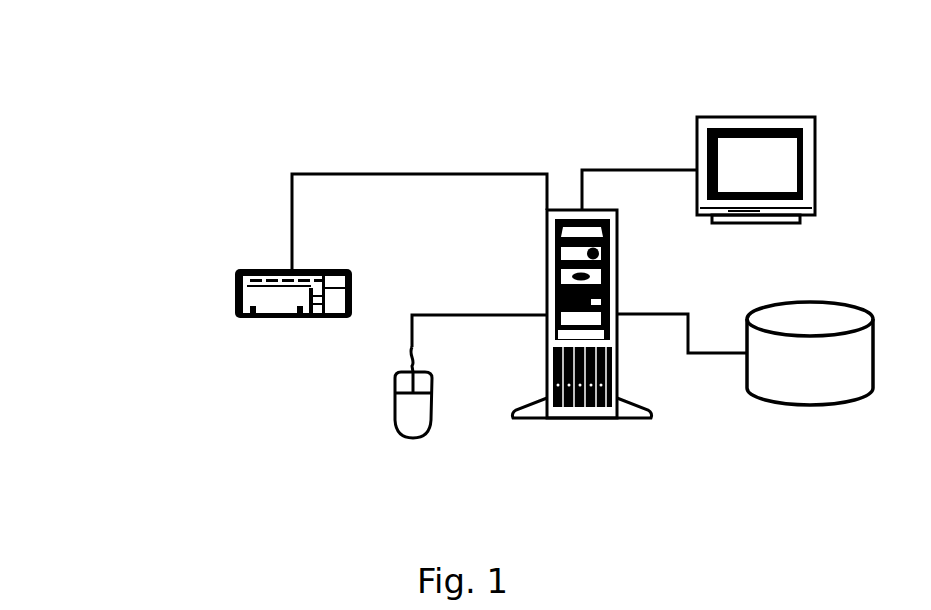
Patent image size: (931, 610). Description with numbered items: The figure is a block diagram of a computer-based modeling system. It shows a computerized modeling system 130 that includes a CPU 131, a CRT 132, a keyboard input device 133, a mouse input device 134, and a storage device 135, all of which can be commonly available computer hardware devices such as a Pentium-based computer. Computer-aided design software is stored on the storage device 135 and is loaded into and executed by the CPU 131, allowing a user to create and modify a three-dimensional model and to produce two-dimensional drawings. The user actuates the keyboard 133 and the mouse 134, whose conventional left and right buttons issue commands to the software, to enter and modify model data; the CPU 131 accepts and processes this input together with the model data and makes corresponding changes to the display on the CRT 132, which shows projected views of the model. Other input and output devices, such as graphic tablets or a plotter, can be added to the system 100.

The system 100 is at (578, 48).
The computerized modeling system 130 is at (178, 132).
The CPU 131 is at (581, 337).
The CRT 132 is at (756, 193).
The keyboard input device 133 is at (293, 316).
The mouse input device 134 is at (415, 416).
The storage device 135 is at (810, 353).